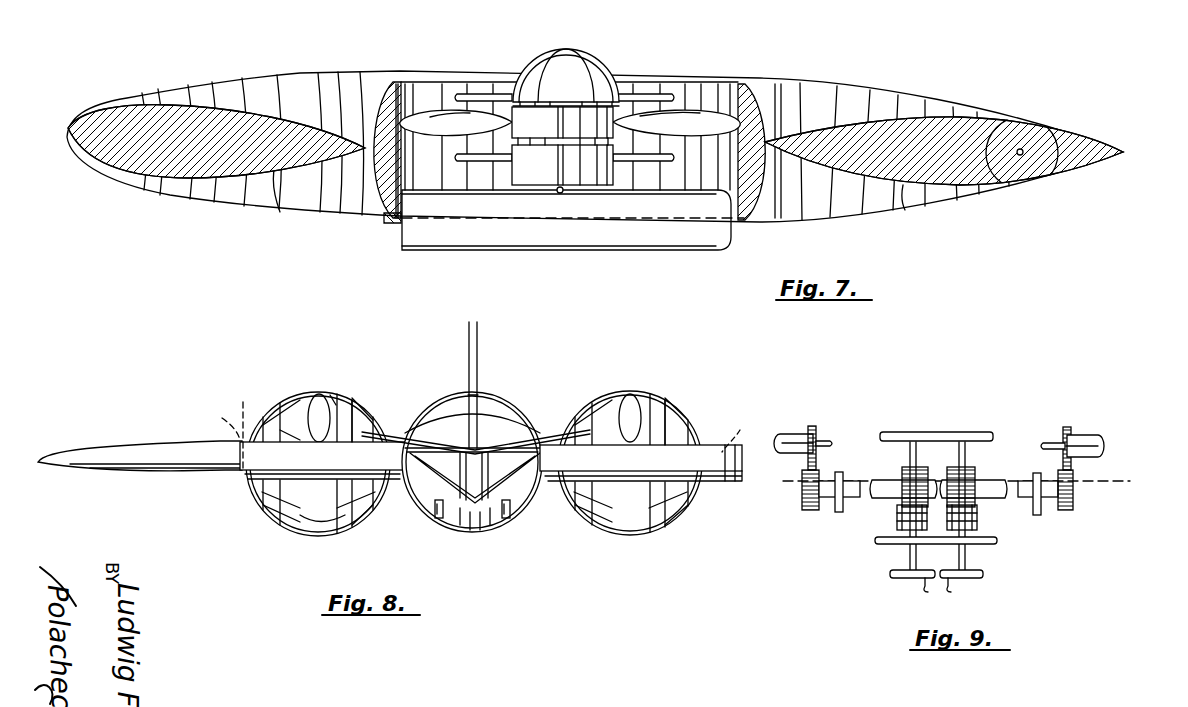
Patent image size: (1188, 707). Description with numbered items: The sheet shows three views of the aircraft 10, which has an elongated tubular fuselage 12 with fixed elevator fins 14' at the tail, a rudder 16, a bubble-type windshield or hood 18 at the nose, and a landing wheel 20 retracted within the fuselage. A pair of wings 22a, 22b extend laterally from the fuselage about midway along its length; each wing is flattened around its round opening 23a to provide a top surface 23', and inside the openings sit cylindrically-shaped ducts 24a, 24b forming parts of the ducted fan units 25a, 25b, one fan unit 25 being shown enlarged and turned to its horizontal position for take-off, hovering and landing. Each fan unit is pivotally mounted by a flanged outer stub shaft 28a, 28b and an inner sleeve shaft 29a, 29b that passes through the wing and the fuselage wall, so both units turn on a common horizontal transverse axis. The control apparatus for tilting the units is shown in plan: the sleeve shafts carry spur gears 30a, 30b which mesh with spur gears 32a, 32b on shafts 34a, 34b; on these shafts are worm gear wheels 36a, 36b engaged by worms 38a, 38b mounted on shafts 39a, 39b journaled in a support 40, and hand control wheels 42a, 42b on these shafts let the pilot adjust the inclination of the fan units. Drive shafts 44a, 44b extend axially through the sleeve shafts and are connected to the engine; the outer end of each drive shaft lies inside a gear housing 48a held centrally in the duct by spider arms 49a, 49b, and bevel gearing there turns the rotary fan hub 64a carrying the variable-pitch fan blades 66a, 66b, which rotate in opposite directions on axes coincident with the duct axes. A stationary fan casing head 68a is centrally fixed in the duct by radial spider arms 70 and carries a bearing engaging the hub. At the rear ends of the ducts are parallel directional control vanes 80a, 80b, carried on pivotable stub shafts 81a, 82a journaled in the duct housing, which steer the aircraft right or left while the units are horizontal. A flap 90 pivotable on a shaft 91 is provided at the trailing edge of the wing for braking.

In FIG. 8, the aircraft 10 is at (513, 549).
In FIG. 8, the fuselage 12 is at (468, 541).
In FIG. 8, the fixed elevator fins 14' is at (476, 417).
In FIG. 8, the rudder 16 is at (467, 362).
In FIG. 8, the windshield or hood 18 is at (512, 403).
In FIG. 8, the landing wheel 20 is at (447, 532).
In FIG. 7, the wing 22a is at (882, 77).
In FIG. 8, the wing 22a is at (201, 478).
In FIG. 8, the wing 22b is at (740, 493).
In FIG. 7, the top surface 23' is at (575, 128).
In FIG. 8, the top surface 23' is at (217, 423).
In FIG. 7, the round opening 23a is at (355, 218).
In FIG. 7, the cylindrically-shaped duct 24a is at (750, 100).
In FIG. 8, the cylindrically-shaped duct 24a is at (352, 407).
In FIG. 8, the cylindrically-shaped duct 24b is at (672, 416).
In FIG. 7, the lower housing box 25 is at (514, 255).
In FIG. 8, the ducted fan unit 25a is at (331, 536).
In FIG. 8, the ducted fan unit 25b is at (645, 536).
In FIG. 8, the flanged outer stub shaft 28a is at (255, 436).
In FIG. 8, the flanged outer stub shaft 28b is at (741, 428).
In FIG. 8, the inner sleeve shaft 29a is at (395, 457).
In FIG. 9, the inner sleeve shaft 29a is at (1085, 436).
In FIG. 8, the inner sleeve shaft 29b is at (641, 463).
In FIG. 9, the inner sleeve shaft 29b is at (790, 435).
In FIG. 9, the spur gear 30a is at (1068, 427).
In FIG. 9, the spur gear 30b is at (814, 426).
In FIG. 9, the spur gear 32a is at (1074, 490).
In FIG. 9, the spur gear 32b is at (806, 495).
In FIG. 9, the shaft 34a is at (1048, 506).
In FIG. 9, the shaft 34b is at (828, 481).
In FIG. 9, the worm gear wheel 36a is at (963, 483).
In FIG. 9, the worm gear wheel 36b is at (910, 471).
In FIG. 9, the worm 38a is at (988, 522).
In FIG. 9, the worm 38b is at (892, 521).
In FIG. 9, the shaft 39a is at (968, 545).
In FIG. 9, the shaft 39b is at (905, 559).
In FIG. 9, the support 40 is at (976, 431).
In FIG. 9, the foot bracket 42a is at (949, 586).
In FIG. 9, the foot bracket 42b is at (912, 579).
In FIG. 9, the drive shaft 44a is at (1043, 443).
In FIG. 9, the drive shaft 44b is at (826, 441).
In FIG. 7, the gear housing 48a is at (570, 173).
In FIG. 7, the spider arm 49a is at (650, 163).
In FIG. 8, the spider arm 49a is at (346, 395).
In FIG. 8, the spider arm 49b is at (660, 395).
In FIG. 7, the rotary fan hub 64a is at (568, 118).
In FIG. 7, the fan blades 66a is at (694, 118).
In FIG. 8, the fan blades 66a is at (312, 390).
In FIG. 8, the fan blades 66b is at (640, 399).
In FIG. 7, the fan casing head 68a is at (572, 69).
In FIG. 7, the propeller shaft 70 is at (647, 93).
In FIG. 7, the directional control vane 80a is at (690, 239).
In FIG. 8, the directional control vane 80b is at (285, 526).
In FIG. 7, the pivotable stub shaft 81a is at (752, 222).
In FIG. 7, the pivotable stub shaft 82a is at (384, 226).
In FIG. 7, the flap 90 is at (1085, 146).
In FIG. 7, the shaft 91 is at (1021, 149).